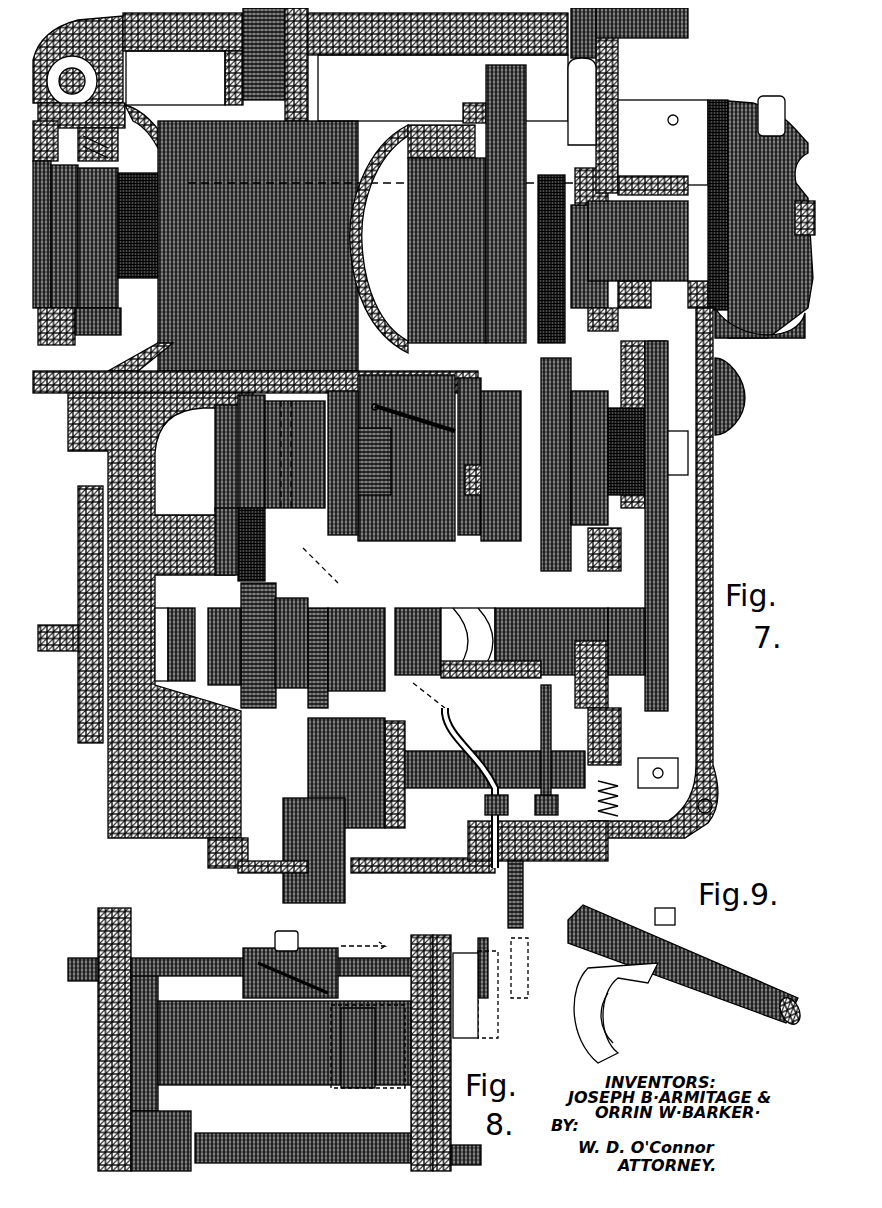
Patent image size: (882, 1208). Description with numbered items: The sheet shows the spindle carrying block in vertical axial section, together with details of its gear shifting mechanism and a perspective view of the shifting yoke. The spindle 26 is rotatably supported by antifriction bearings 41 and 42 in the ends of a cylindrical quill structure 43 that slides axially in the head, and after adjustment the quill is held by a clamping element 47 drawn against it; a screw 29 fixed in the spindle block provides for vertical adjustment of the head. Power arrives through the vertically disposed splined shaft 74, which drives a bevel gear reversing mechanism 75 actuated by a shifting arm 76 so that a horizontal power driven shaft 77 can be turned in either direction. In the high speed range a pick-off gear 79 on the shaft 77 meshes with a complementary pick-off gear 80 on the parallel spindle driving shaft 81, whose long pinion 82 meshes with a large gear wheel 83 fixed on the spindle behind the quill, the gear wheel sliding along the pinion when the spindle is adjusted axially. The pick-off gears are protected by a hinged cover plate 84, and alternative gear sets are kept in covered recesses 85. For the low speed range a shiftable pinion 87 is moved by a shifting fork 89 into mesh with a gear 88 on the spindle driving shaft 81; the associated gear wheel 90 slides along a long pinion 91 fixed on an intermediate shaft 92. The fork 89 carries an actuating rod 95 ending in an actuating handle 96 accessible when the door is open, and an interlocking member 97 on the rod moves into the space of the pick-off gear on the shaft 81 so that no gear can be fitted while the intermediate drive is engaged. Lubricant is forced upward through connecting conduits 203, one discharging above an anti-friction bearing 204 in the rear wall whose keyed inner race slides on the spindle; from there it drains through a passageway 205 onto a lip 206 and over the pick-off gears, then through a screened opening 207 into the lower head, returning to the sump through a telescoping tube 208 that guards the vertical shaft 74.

In FIG. 7, the spindle 26 is at (60, 200).
In FIG. 7, the screw 29 is at (217, 60).
In FIG. 7, the antifriction bearing 41 is at (127, 97).
In FIG. 7, the antifriction bearing 42 is at (460, 133).
In FIG. 7, the quill structure 43 is at (343, 122).
In FIG. 7, the clamping element 47 is at (60, 67).
In FIG. 7, the splined shaft 74 is at (270, 873).
In FIG. 7, the bevel gear reversing mechanism 75 is at (333, 598).
In FIG. 7, the shifting arm 76 is at (313, 598).
In FIG. 7, the horizontal power driven shaft 77 is at (467, 600).
In FIG. 7, the pick-off gear 79 is at (647, 697).
In FIG. 7, the pick-off gear 80 is at (662, 547).
In FIG. 7, the spindle driving shaft 81 is at (385, 445).
In FIG. 7, the long pinion 82 is at (333, 397).
In FIG. 7, the gear wheel 83 is at (478, 62).
In FIG. 7, the hinged cover plate 84 is at (708, 708).
In FIG. 7, the covered recesses 85 is at (372, 405).
In FIG. 7, the shiftable pinion 87 is at (520, 533).
In FIG. 8, the shiftable pinion 87 is at (350, 1080).
In FIG. 7, the gear 88 is at (547, 350).
In FIG. 7, the shifting fork 89 is at (405, 408).
In FIG. 8, the shifting fork 89 is at (323, 957).
In FIG. 9, the shifting fork 89 is at (612, 1007).
In FIG. 7, the gear wheel 90 is at (245, 503).
In FIG. 8, the gear wheel 90 is at (123, 1043).
In FIG. 7, the long pinion 91 is at (295, 556).
In FIG. 8, the long pinion 91 is at (187, 1120).
In FIG. 8, the intermediate shaft 92 is at (253, 1130).
In FIG. 8, the actuating rod 95 is at (163, 953).
In FIG. 9, the actuating rod 95 is at (760, 962).
In FIG. 7, the actuating handle 96 is at (650, 350).
In FIG. 8, the actuating handle 96 is at (500, 933).
In FIG. 8, the interlocking member 97 is at (453, 1030).
In FIG. 7, the connecting conduits 203 is at (533, 717).
In FIG. 7, the anti-friction bearing 204 is at (607, 150).
In FIG. 7, the passageway 205 is at (637, 297).
In FIG. 7, the lip 206 is at (643, 305).
In FIG. 7, the screened opening 207 is at (653, 833).
In FIG. 7, the telescoping tube 208 is at (343, 882).